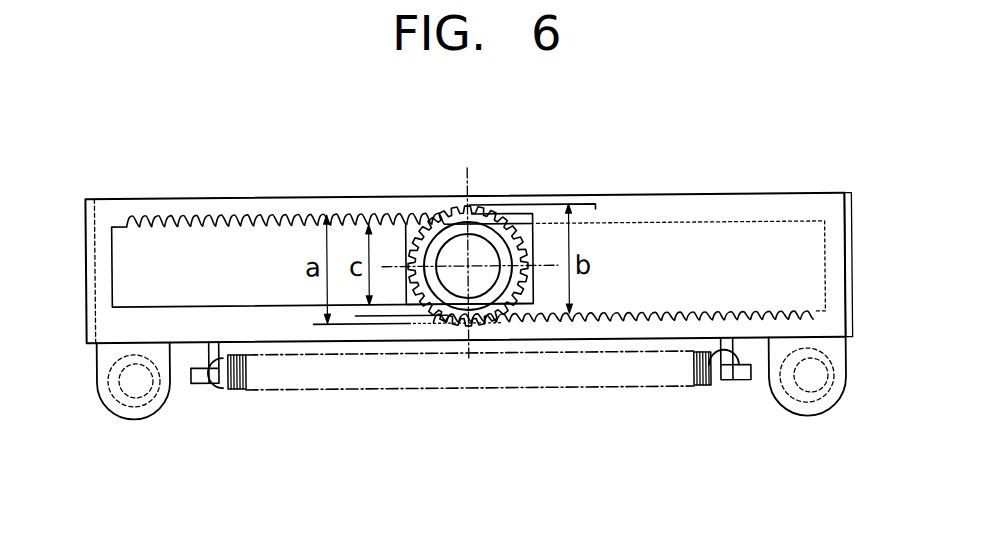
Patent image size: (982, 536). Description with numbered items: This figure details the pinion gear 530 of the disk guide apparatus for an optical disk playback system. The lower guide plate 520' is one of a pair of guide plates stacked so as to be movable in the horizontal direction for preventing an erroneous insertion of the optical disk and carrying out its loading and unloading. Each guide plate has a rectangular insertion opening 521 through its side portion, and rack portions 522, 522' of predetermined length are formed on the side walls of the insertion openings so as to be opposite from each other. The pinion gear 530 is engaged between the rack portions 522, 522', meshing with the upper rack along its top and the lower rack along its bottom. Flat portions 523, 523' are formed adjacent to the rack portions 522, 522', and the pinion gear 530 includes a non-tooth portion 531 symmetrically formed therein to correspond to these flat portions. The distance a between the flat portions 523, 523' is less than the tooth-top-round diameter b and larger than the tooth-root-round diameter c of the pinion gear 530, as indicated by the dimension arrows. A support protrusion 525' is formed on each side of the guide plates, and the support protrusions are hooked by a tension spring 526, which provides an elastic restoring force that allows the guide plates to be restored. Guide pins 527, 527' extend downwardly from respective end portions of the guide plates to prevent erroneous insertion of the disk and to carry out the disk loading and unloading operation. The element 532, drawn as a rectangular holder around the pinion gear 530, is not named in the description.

The lower guide plate 520' is at (469, 234).
The rectangular insertion opening 521 is at (161, 222).
The rack portion 522 is at (322, 215).
The rack portion 522' is at (630, 341).
The flat portion 523 is at (532, 169).
The flat portion 523' is at (407, 388).
The support protrusion 525' is at (483, 406).
The tension spring 526 is at (515, 383).
The guide pin 527 is at (823, 405).
The guide pin 527' is at (134, 413).
The pinion gear 530 is at (443, 214).
The non-tooth portion 531 is at (478, 222).
The gear holder 532 is at (402, 214).